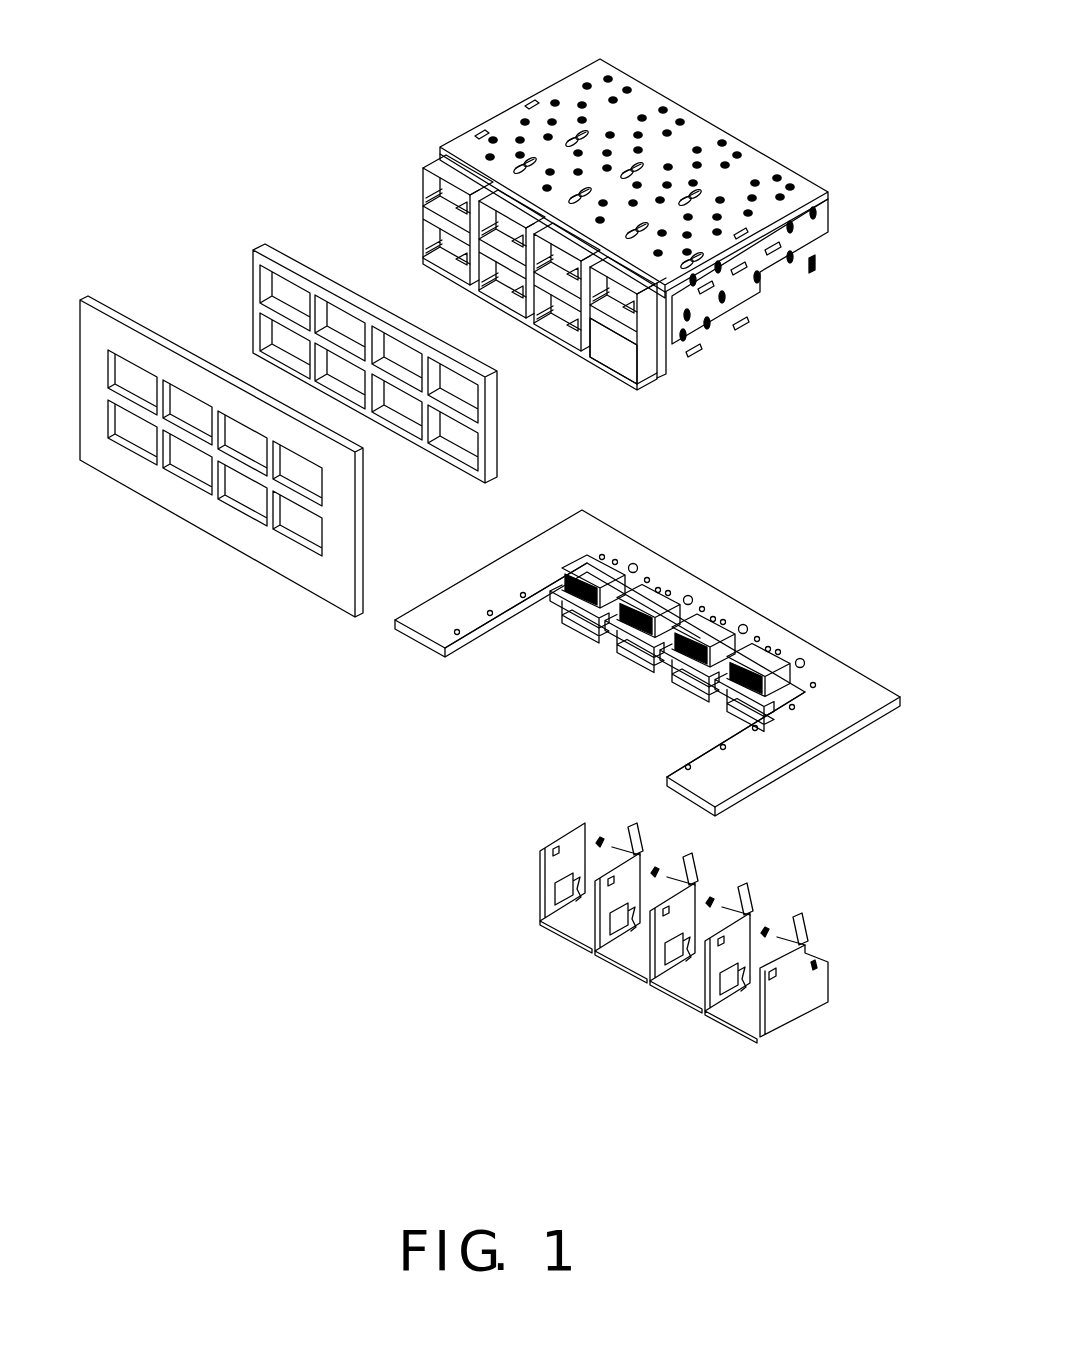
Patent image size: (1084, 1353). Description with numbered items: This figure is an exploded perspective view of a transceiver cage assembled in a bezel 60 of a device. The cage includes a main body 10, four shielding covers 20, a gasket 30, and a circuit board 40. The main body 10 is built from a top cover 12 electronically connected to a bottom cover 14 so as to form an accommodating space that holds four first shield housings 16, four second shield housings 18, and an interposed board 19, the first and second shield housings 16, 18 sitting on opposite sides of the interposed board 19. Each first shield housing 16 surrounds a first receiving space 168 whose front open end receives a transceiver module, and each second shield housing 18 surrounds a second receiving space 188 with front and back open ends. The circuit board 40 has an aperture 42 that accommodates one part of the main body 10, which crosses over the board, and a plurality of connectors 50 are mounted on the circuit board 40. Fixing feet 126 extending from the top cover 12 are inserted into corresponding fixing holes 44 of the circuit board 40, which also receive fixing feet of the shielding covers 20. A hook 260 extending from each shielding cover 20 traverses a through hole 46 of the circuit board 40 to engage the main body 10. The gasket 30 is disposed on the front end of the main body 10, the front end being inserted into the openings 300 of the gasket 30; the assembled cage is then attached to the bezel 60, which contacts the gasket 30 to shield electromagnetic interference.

The main body 10 is at (604, 241).
The top cover 12 is at (505, 120).
The bottom cover 14 is at (745, 300).
The first shield housing 16 is at (440, 165).
The first receiving space 168 is at (432, 215).
The second receiving space 188 is at (622, 350).
The second shield housing 18 is at (645, 370).
The interposed board 19 is at (668, 345).
The fixing feet 126 is at (812, 268).
The shielding cover 20 is at (729, 942).
The hook 260 is at (802, 922).
The gasket 30 is at (364, 349).
The openings 300 is at (466, 440).
The circuit board 40 is at (644, 645).
The aperture 42 is at (545, 687).
The fixing holes 44 is at (818, 684).
The through hole 46 is at (804, 660).
The connectors 50 is at (585, 570).
The bezel 60 is at (107, 325).